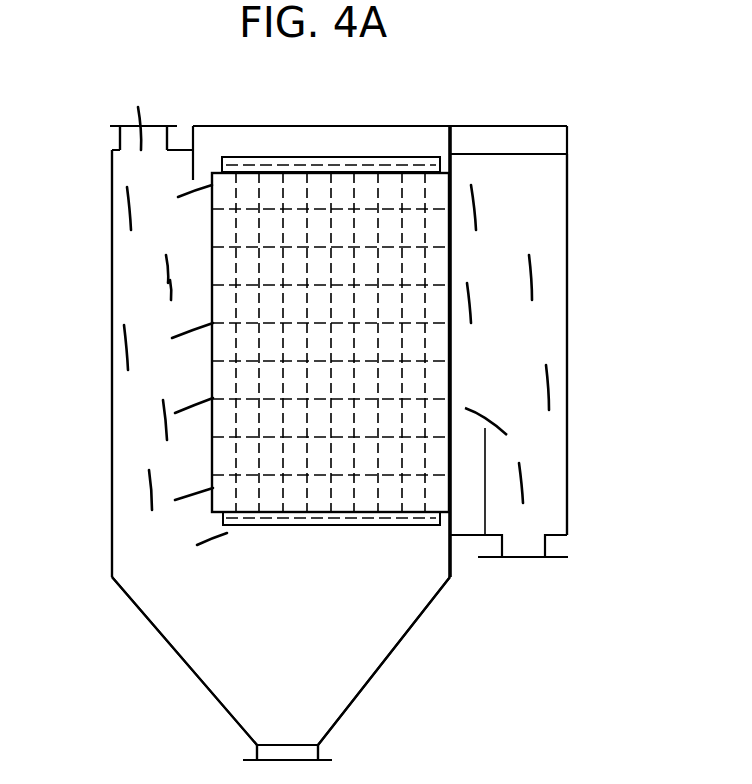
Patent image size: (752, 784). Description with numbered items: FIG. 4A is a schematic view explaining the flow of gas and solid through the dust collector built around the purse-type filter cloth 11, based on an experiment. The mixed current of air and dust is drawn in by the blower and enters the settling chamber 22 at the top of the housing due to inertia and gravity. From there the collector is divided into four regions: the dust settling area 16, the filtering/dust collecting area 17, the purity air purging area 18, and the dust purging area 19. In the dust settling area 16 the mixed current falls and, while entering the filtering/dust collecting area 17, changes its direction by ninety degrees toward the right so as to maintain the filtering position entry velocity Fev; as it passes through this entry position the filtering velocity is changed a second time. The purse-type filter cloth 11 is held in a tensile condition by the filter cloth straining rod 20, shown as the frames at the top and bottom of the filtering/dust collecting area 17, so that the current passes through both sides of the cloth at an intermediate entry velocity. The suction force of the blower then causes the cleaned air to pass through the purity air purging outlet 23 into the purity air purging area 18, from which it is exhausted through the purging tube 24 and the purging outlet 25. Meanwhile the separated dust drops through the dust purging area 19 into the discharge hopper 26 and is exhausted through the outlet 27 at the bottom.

The purse-type filter cloth 11 is at (212, 458).
The dust settling area 16 is at (130, 226).
The filtering/dust collecting area 17 is at (410, 335).
The purity air purging area 18 is at (547, 463).
The dust purging area 19 is at (393, 627).
The filter cloth straining rod 20 is at (325, 165).
The settling chamber 22 is at (120, 143).
The purity air purging outlet 23 is at (567, 154).
The purging tube 24 is at (567, 237).
The purging outlet 25 is at (527, 543).
The discharge hopper 26 is at (178, 653).
The outlet 27 is at (303, 750).